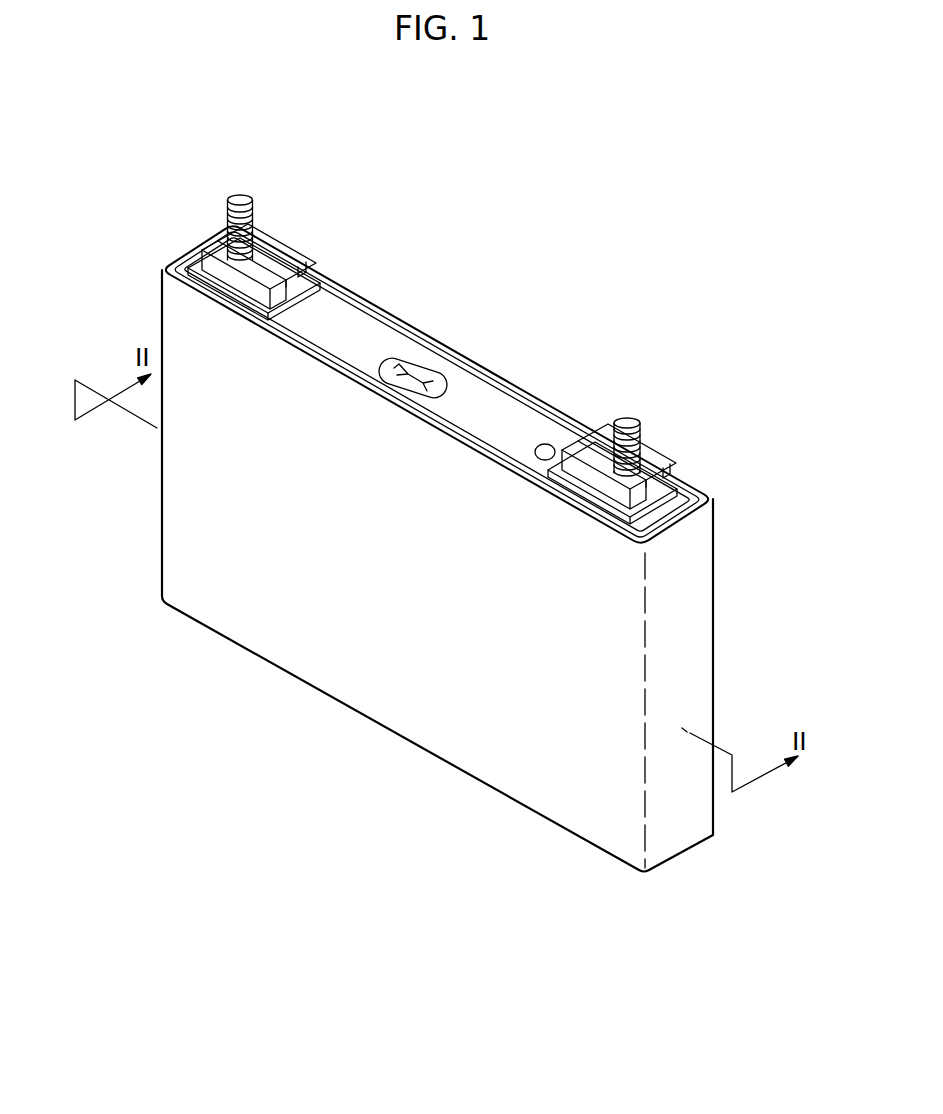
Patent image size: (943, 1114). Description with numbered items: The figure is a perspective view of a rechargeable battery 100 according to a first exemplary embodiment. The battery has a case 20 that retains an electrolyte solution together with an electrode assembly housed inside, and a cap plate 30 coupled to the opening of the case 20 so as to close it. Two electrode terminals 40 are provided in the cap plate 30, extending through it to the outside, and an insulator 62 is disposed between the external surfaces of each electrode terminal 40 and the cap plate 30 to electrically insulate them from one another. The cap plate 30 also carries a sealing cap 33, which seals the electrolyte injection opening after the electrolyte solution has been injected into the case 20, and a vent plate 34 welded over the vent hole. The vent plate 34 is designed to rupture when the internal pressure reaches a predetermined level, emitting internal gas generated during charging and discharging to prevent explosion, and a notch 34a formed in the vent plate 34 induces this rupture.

The rechargeable battery 100 is at (547, 289).
The case 20 is at (353, 688).
The cap plate 30 is at (377, 336).
The sealing cap 33 is at (549, 449).
The vent plate 34 is at (437, 372).
The notch 34a is at (412, 373).
The electrode terminal 40 is at (650, 436).
The insulator 62 is at (653, 503).